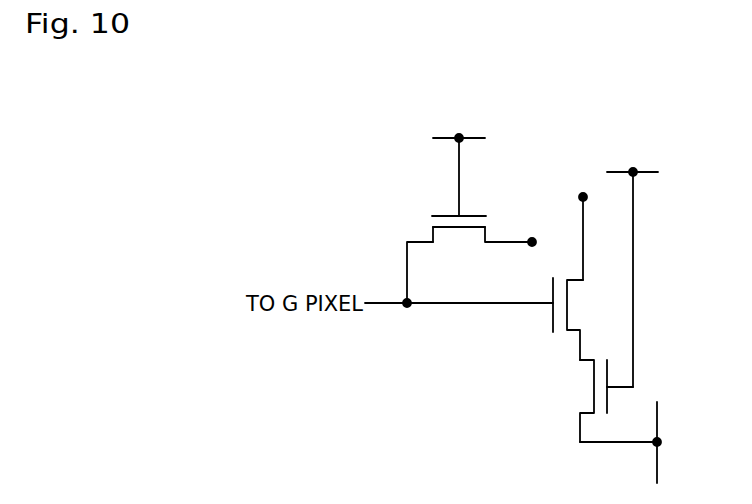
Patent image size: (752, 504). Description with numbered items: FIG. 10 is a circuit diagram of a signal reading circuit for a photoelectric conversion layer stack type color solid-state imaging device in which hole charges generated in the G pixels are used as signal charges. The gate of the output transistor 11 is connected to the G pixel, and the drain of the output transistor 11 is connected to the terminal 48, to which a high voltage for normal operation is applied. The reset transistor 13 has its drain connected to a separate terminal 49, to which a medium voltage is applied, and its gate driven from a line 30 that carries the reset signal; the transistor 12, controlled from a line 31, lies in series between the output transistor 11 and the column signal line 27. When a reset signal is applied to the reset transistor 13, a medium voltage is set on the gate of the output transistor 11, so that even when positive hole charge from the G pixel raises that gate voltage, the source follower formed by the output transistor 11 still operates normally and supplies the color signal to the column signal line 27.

The power supply line 30 is at (444, 134).
The reset transistor 13 is at (443, 215).
The terminal 49 is at (532, 238).
The terminal 48 is at (581, 195).
The output transistor 11 is at (553, 320).
The transistor 12 is at (582, 387).
The power supply line 31 is at (650, 170).
The column signal line 27 is at (659, 467).